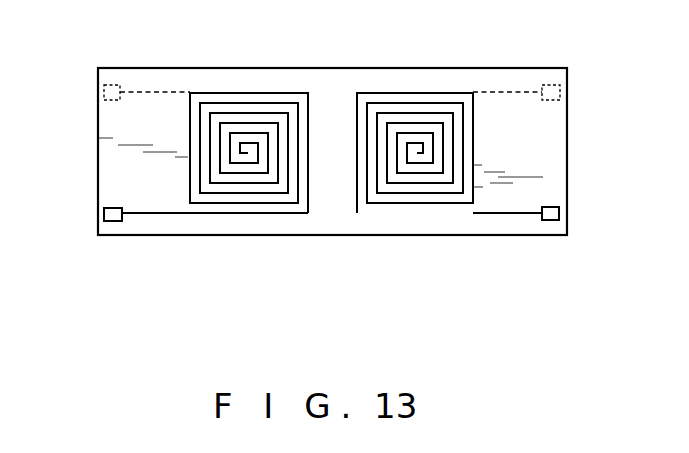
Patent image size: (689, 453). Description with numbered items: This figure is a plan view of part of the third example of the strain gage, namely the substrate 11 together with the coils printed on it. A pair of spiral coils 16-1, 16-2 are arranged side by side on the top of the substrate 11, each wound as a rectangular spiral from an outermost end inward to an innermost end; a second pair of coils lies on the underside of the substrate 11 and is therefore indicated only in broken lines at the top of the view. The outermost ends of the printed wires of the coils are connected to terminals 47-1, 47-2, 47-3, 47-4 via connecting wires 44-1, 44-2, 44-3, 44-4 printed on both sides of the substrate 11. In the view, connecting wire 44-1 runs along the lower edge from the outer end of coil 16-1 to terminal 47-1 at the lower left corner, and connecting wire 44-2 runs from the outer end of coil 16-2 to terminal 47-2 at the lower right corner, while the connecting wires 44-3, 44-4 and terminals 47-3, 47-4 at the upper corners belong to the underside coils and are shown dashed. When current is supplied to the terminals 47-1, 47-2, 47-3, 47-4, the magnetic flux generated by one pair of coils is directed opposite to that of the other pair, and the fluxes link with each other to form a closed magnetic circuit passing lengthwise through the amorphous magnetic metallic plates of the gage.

The substrate 11 is at (98, 155).
The coil 16-1 is at (242, 123).
The coil 16-2 is at (405, 115).
The connecting wire 44-1 is at (177, 213).
The connecting wire 44-2 is at (472, 215).
The connecting wire 44-3 is at (150, 91).
The connecting wire 44-4 is at (493, 91).
The terminal 47-1 is at (108, 222).
The terminal 47-2 is at (550, 220).
The terminal 47-3 is at (112, 83).
The terminal 47-4 is at (550, 84).